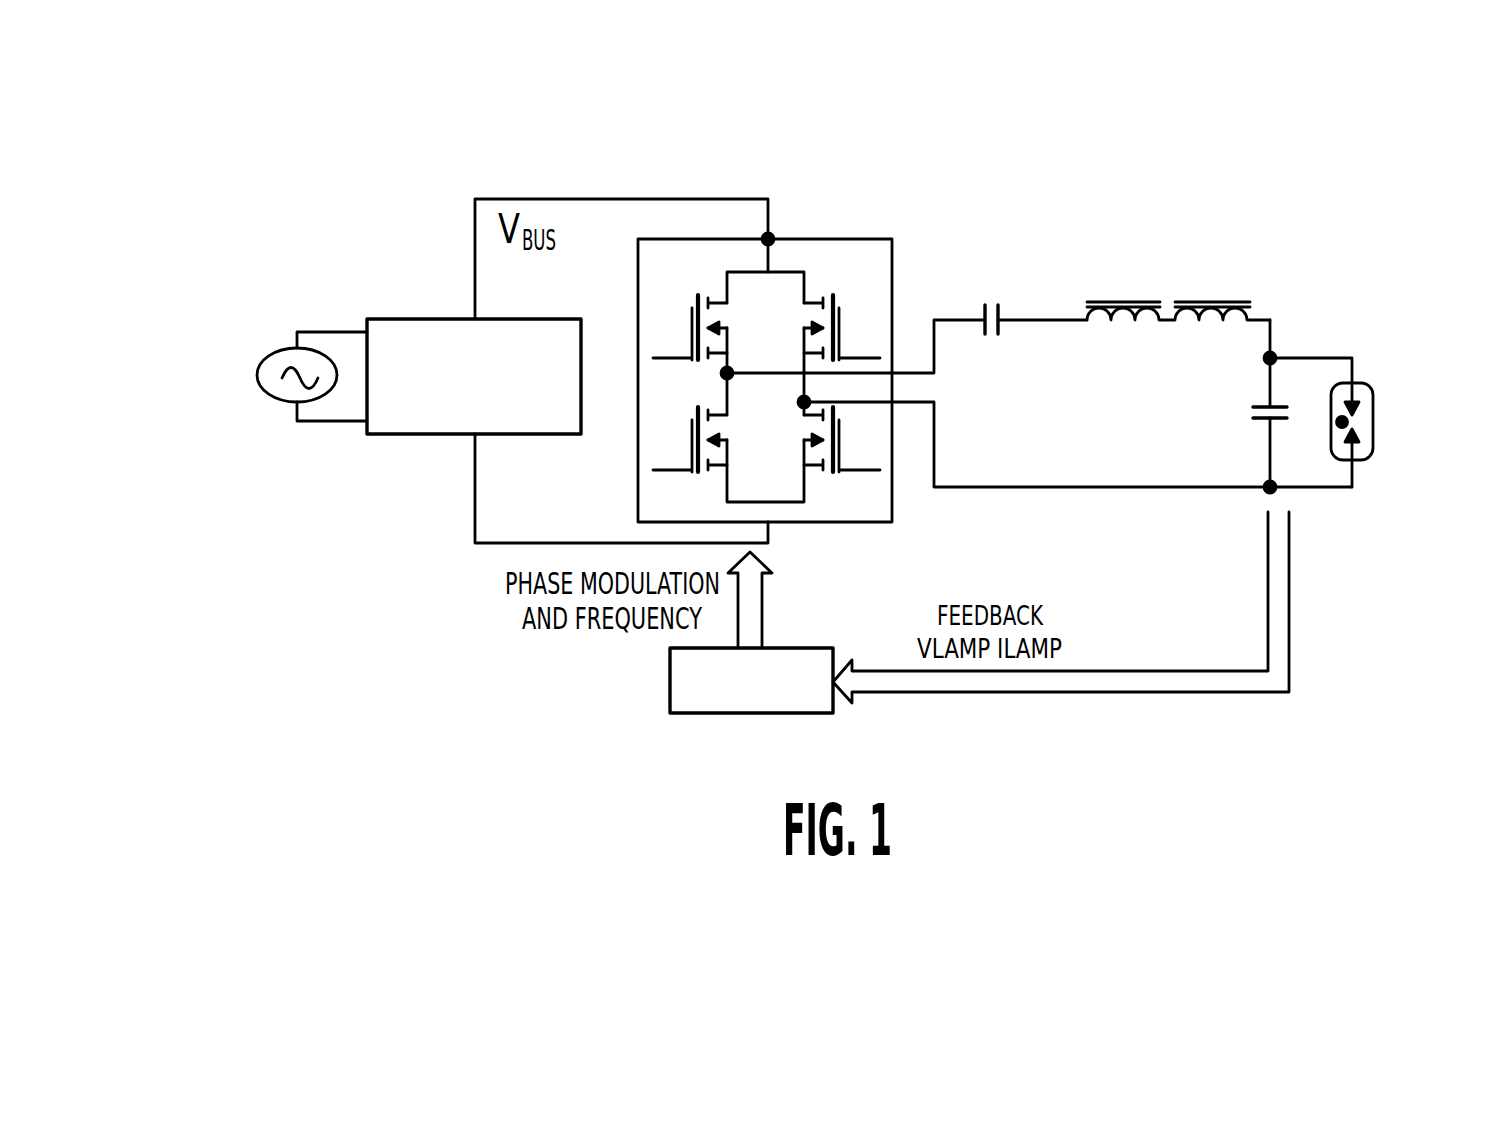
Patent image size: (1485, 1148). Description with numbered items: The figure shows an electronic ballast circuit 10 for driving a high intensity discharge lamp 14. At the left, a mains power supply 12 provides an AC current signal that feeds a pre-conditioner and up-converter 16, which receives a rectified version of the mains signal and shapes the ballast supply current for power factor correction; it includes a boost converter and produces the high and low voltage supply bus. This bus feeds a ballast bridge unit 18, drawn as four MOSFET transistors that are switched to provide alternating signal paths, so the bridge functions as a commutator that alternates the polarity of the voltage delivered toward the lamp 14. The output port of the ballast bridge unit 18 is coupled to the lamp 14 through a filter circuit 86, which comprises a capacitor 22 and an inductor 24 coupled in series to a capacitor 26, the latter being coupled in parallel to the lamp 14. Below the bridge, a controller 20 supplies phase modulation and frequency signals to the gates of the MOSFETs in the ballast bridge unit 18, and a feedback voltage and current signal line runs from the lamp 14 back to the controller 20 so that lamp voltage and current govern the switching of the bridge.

The electronic ballast circuit 10 is at (362, 609).
The mains power supply 12 is at (257, 378).
The lamp 14 is at (1374, 425).
The pre-conditioner and up-converter 16 is at (418, 424).
The ballast bridge unit 18 is at (862, 522).
The controller 20 is at (670, 683).
The capacitor 22 is at (991, 338).
The inductor 24 is at (1103, 326).
The capacitor 26 is at (1263, 423).
The filter circuit 86 is at (1310, 247).